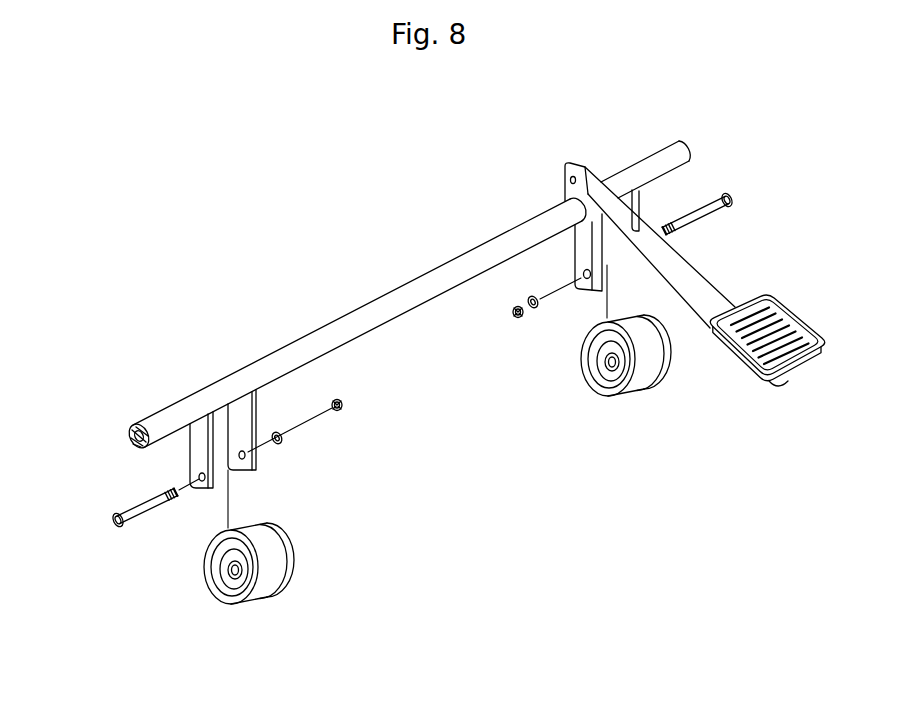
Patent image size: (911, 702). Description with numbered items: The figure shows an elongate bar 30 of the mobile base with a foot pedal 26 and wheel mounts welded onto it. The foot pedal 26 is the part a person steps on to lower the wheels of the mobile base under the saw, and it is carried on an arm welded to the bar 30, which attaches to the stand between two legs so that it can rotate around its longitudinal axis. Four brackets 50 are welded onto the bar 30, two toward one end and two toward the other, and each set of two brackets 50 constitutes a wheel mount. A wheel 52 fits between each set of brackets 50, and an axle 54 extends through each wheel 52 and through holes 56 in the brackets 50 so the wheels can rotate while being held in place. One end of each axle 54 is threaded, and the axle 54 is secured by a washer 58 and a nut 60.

The foot pedal 26 is at (800, 290).
The elongate bar 30 is at (380, 307).
The brackets 50 is at (640, 192).
The wheel 52 is at (612, 390).
The axle 54 is at (702, 215).
The holes 56 is at (587, 277).
The washer 58 is at (279, 443).
The nut 60 is at (345, 410).